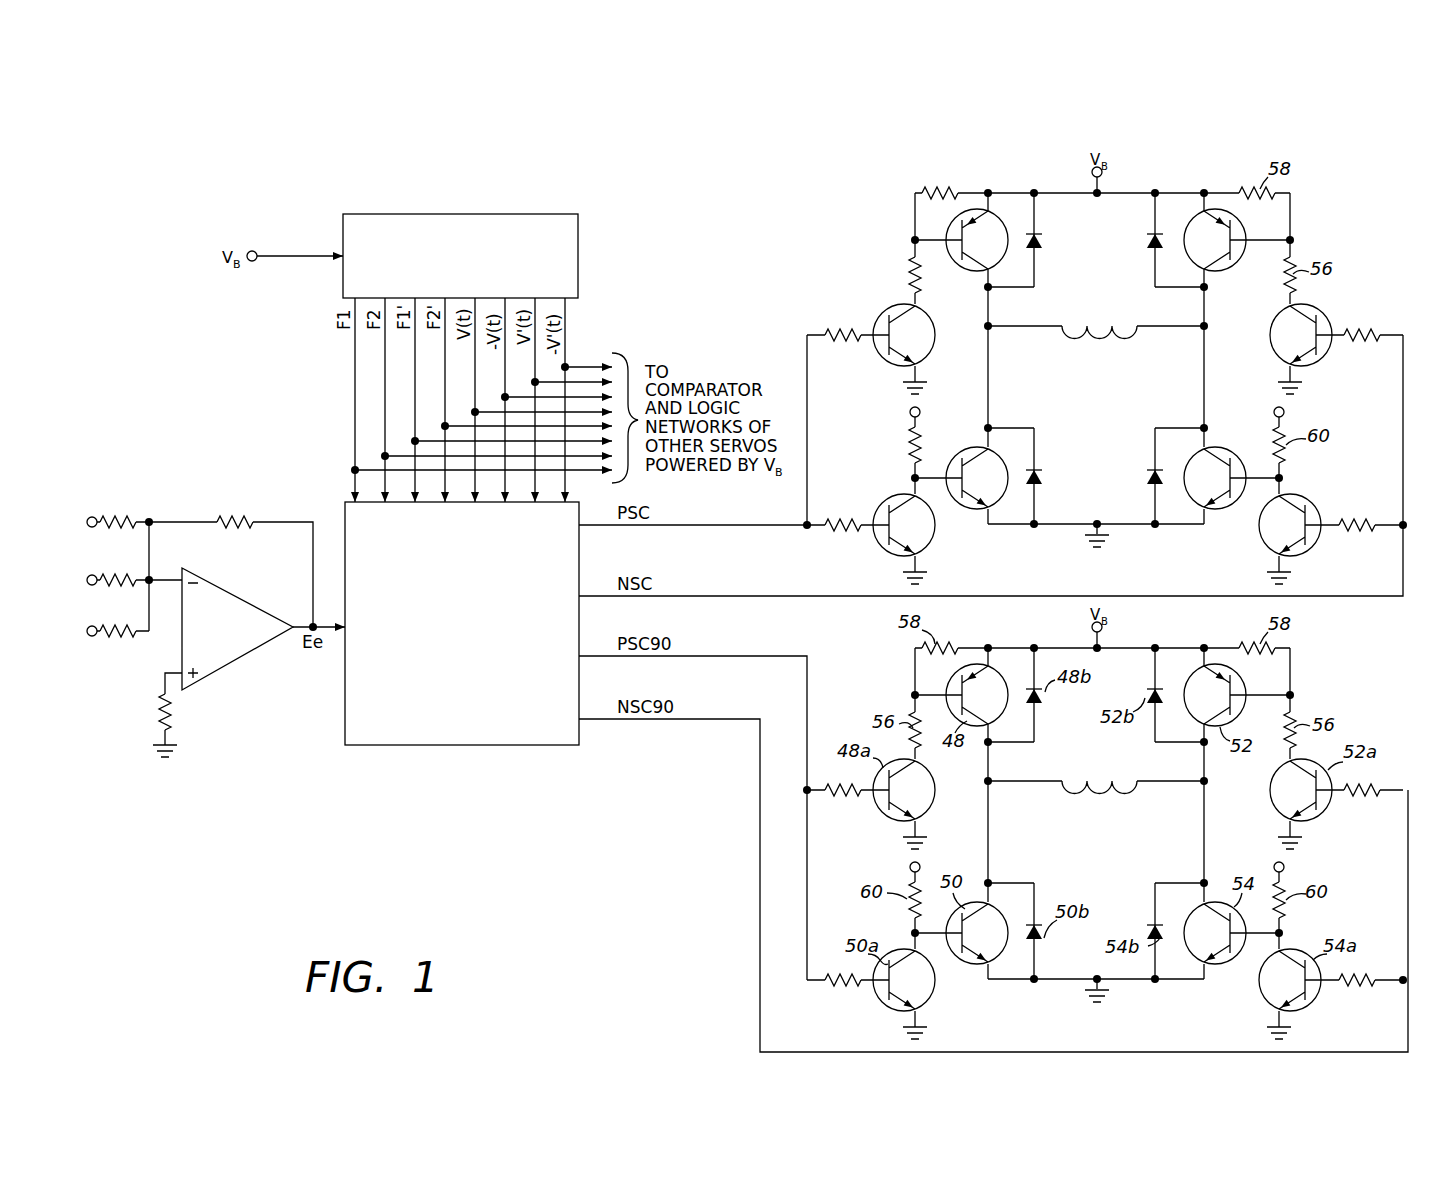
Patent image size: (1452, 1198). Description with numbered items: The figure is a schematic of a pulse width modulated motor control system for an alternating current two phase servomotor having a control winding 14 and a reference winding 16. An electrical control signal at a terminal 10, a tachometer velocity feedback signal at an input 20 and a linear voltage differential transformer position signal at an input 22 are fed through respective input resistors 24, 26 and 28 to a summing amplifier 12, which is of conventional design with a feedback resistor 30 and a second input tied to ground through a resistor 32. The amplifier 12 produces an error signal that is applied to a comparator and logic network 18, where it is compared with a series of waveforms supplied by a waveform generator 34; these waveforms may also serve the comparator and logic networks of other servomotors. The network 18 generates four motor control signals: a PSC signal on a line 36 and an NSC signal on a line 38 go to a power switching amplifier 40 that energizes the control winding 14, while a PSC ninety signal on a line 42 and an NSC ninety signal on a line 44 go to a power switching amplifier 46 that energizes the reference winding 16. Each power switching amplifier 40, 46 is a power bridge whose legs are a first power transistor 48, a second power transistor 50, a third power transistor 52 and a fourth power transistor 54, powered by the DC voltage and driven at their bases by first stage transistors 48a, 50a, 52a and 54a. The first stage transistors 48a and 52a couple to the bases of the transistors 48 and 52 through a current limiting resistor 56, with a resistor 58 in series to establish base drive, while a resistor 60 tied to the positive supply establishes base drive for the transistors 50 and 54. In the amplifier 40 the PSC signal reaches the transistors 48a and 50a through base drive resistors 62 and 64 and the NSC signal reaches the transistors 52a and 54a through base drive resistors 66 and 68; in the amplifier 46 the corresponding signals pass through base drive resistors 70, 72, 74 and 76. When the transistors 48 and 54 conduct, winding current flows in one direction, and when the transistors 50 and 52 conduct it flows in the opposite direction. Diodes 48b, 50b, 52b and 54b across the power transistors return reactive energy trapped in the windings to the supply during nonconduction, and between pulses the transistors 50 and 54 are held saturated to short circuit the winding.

The terminal 10 is at (88, 517).
The summing amplifier 12 is at (232, 637).
The control winding 14 is at (1106, 328).
The reference winding 16 is at (1121, 781).
The comparator and logic network 18 is at (409, 746).
The input 20 is at (92, 575).
The input 22 is at (92, 638).
The input resistor 24 is at (124, 515).
The input resistor 26 is at (120, 572).
The input resistor 28 is at (127, 640).
The feedback resistor 30 is at (235, 516).
The resistor 32 is at (157, 712).
The waveform generator 34 is at (580, 246).
The line 36 is at (706, 527).
The line 38 is at (726, 595).
The power switching amplifier 40 is at (1108, 401).
The line 42 is at (716, 658).
The line 44 is at (748, 702).
The power switching amplifier 46 is at (1113, 866).
The first power transistor 48 is at (965, 270).
The first stage transistor 48a is at (888, 360).
The diode 48b is at (1042, 246).
The second power transistor 50 is at (965, 448).
The first stage transistor 50a is at (882, 500).
The diode 50b is at (1042, 473).
The third power transistor 52 is at (1220, 272).
The first stage transistor 52a is at (1326, 358).
The diode 52b is at (1145, 246).
The fourth power transistor 54 is at (1232, 447).
The first stage transistor 54a is at (1313, 500).
The diode 54b is at (1146, 478).
The current limiting resistor 56 is at (910, 276).
The resistor 58 is at (938, 188).
The resistor 60 is at (905, 444).
The base drive resistor 62 is at (840, 328).
The base drive resistor 64 is at (841, 531).
The base drive resistor 66 is at (1374, 329).
The base drive resistor 68 is at (1352, 530).
The base drive resistor 70 is at (847, 804).
The base drive resistor 72 is at (825, 992).
The base drive resistor 74 is at (1378, 800).
The base drive resistor 76 is at (1355, 988).